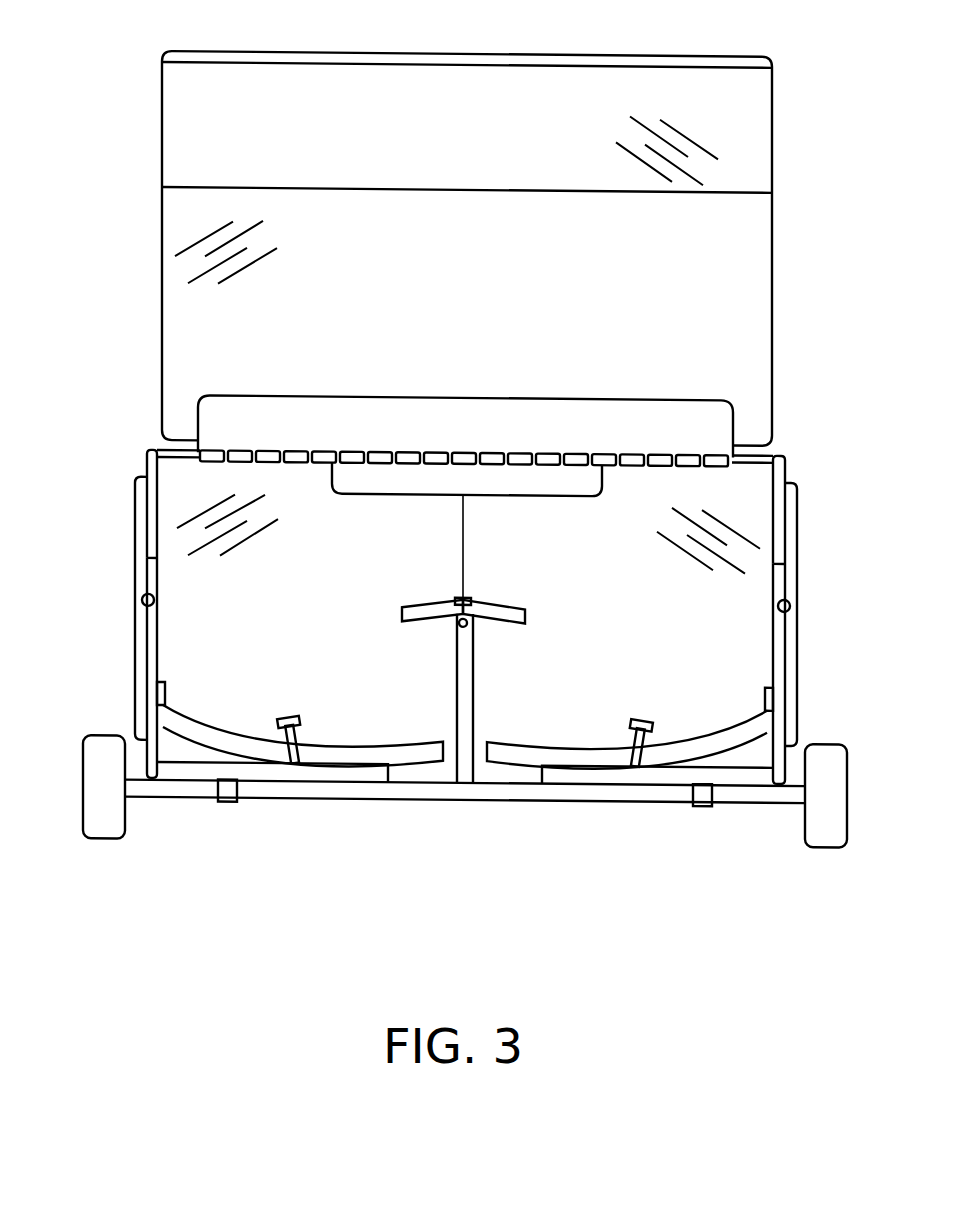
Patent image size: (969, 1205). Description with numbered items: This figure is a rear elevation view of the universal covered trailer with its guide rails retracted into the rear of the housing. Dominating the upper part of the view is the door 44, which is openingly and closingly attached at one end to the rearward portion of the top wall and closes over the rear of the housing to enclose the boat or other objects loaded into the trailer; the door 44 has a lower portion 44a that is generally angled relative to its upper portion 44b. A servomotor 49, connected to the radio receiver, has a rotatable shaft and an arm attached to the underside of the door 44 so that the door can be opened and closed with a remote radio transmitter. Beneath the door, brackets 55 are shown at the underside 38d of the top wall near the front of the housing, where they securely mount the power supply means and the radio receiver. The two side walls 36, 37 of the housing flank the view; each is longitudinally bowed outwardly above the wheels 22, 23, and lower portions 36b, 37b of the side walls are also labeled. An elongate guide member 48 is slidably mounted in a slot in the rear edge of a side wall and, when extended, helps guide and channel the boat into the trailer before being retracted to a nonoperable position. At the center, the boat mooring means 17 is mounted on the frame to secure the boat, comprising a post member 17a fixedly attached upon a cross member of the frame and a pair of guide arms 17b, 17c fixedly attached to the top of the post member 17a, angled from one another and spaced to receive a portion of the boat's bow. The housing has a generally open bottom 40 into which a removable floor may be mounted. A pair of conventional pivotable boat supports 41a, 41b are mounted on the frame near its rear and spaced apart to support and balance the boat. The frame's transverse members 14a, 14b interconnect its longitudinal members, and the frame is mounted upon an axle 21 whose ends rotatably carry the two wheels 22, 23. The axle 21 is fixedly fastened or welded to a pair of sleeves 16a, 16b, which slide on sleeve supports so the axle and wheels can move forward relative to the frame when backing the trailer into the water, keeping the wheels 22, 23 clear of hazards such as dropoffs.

The door 44 is at (162, 188).
The lower portion 44a is at (740, 134).
The upper portion 44b is at (733, 287).
The underside 38d is at (752, 461).
The brackets 55 is at (525, 485).
The side wall 37 is at (147, 455).
The left lower frame section 37b is at (155, 604).
The servomotor 49 is at (141, 598).
The side wall 36 is at (780, 452).
The right lower frame section 36b is at (770, 606).
The guide member 48 is at (792, 599).
The boat mooring means 17 is at (470, 622).
The post member 17a is at (458, 673).
The guide arm 17b is at (515, 614).
The guide arm 17c is at (420, 607).
The open bottom 40 is at (360, 742).
The pivotable boat support 41a is at (633, 718).
The pivotable boat support 41b is at (290, 716).
The transverse member 14a is at (558, 775).
The transverse member 14b is at (345, 772).
The axle 21 is at (625, 794).
The sleeve 16a is at (704, 801).
The sleeve 16b is at (228, 801).
The wheel 22 is at (835, 830).
The wheel 23 is at (92, 778).